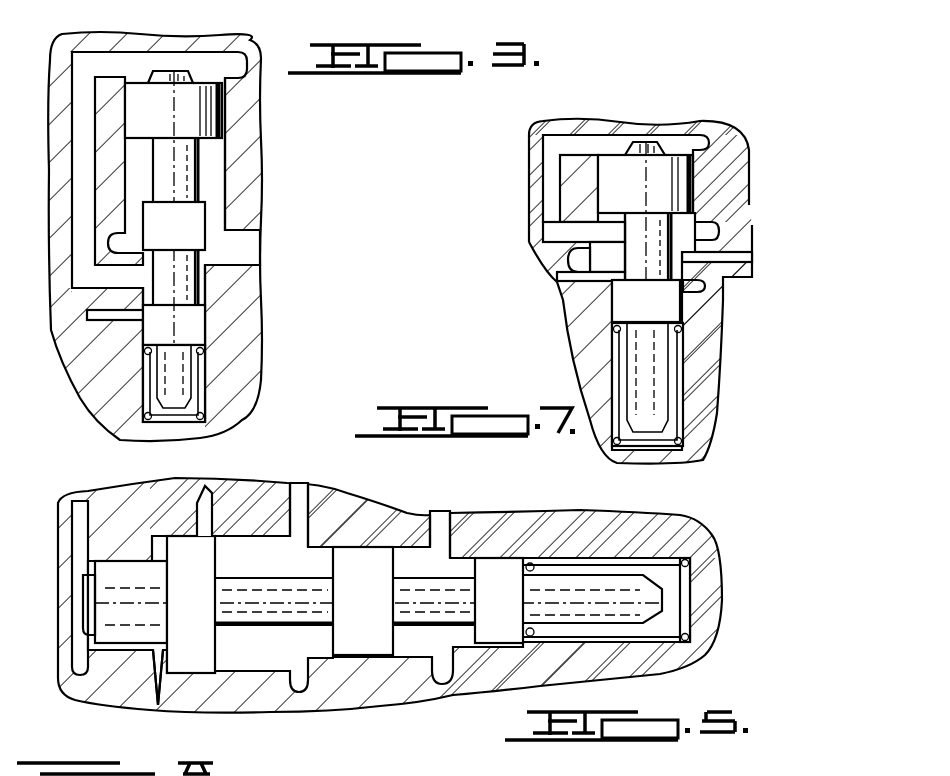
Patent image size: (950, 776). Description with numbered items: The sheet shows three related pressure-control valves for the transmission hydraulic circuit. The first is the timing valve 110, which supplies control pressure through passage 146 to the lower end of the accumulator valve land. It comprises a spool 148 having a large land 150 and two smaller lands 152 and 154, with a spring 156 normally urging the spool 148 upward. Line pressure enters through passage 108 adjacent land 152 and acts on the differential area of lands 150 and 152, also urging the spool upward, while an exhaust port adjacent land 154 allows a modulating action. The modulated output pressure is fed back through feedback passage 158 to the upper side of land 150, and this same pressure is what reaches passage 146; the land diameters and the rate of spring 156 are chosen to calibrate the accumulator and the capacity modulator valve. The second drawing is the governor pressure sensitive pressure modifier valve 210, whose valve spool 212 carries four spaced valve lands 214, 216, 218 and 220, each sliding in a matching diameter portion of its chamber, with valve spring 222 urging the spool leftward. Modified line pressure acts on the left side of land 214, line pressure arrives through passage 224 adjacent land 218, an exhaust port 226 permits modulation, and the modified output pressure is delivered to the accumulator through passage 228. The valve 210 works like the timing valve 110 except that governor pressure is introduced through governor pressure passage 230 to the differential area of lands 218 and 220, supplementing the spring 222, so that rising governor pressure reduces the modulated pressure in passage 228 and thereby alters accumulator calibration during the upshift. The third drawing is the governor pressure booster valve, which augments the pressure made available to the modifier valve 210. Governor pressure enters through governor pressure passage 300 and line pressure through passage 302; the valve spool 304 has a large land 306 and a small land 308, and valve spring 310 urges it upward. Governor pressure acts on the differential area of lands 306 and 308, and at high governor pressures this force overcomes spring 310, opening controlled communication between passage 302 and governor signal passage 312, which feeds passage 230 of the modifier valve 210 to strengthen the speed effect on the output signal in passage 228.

In FIG. 3, the timing valve 110 is at (253, 50).
In FIG. 3, the line pressure passage 108 is at (257, 236).
In FIG. 3, the control pressure passage 146 is at (250, 285).
In FIG. 3, the spool 148 is at (195, 173).
In FIG. 3, the large land 150 is at (215, 110).
In FIG. 3, the small land 152 is at (150, 212).
In FIG. 3, the small land 154 is at (120, 362).
In FIG. 3, the spring 156 is at (95, 320).
In FIG. 3, the feedback passage 158 is at (82, 75).
In FIG. 7, the governor pressure passage 300 is at (546, 173).
In FIG. 7, the line pressure passage 302 is at (577, 289).
In FIG. 7, the valve spool 304 is at (672, 236).
In FIG. 7, the large land 306 is at (688, 160).
In FIG. 7, the small land 308 is at (688, 323).
In FIG. 7, the valve spring 310 is at (687, 447).
In FIG. 7, the governor signal passage 312 is at (706, 288).
In FIG. 5, the pressure modifier valve 210 is at (388, 546).
In FIG. 5, the valve spool 212 is at (257, 625).
In FIG. 5, the valve land 214 is at (108, 643).
In FIG. 5, the valve land 216 is at (197, 666).
In FIG. 5, the valve land 218 is at (350, 553).
In FIG. 5, the valve land 220 is at (503, 567).
In FIG. 5, the valve spring 222 is at (693, 550).
In FIG. 5, the line pressure passage 224 is at (348, 706).
In FIG. 5, the exhaust port 226 is at (208, 510).
In FIG. 5, the modified output pressure passage 228 is at (300, 488).
In FIG. 5, the governor pressure passage 230 is at (447, 520).